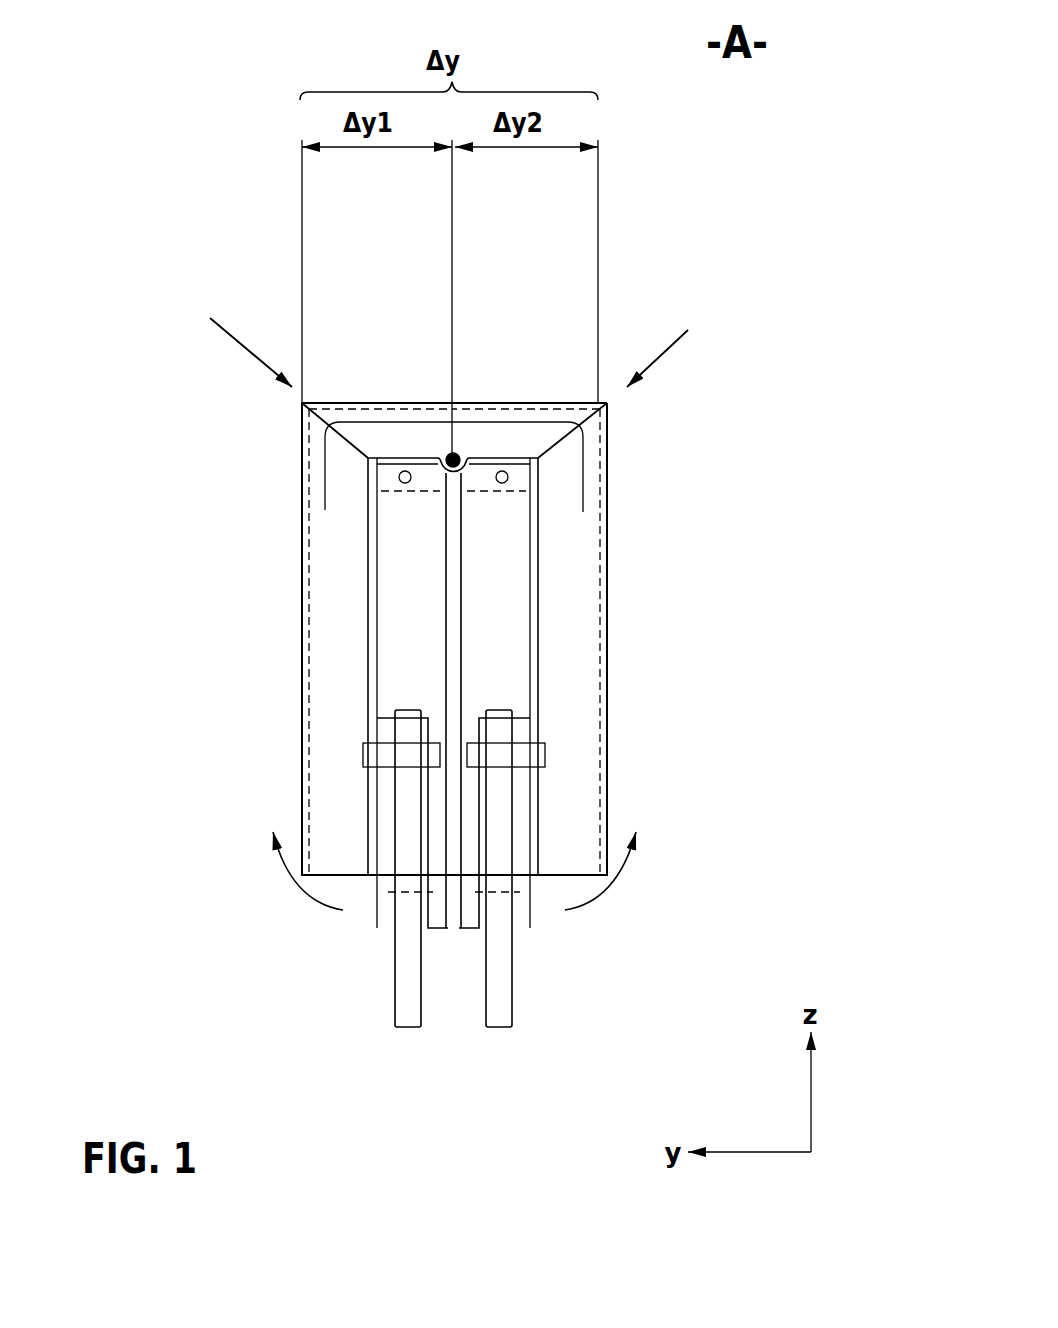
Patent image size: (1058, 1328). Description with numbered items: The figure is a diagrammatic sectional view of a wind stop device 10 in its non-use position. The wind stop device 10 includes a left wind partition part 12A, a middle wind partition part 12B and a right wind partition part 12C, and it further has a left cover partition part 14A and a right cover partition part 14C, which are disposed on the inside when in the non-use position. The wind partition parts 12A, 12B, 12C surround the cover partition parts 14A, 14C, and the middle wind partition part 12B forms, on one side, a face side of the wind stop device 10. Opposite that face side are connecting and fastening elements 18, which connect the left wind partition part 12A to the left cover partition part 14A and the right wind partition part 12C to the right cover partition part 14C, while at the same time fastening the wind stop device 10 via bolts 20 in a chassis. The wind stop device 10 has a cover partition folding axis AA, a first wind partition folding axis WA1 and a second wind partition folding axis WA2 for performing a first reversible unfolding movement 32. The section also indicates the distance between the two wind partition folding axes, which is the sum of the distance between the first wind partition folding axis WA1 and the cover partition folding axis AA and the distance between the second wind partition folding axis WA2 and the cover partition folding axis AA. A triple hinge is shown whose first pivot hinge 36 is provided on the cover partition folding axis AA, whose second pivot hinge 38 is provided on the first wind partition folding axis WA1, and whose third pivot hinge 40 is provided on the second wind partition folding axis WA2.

The wind stop device 10 is at (217, 167).
The left wind partition part 12A is at (322, 600).
The middle wind partition part 12B is at (425, 437).
The right wind partition part 12C is at (578, 600).
The left cover partition part 14A is at (390, 547).
The right cover partition part 14C is at (510, 547).
The connecting and fastening elements 18 is at (343, 808).
The bolts 20 is at (408, 1005).
The first reversible unfolding movement 32 is at (458, 879).
The first pivot hinge 36 is at (579, 574).
The second pivot hinge 38 is at (500, 378).
The third pivot hinge 40 is at (579, 574).
The cover partition folding axis AA is at (458, 455).
The first wind partition folding axis WA1 is at (224, 335).
The second wind partition folding axis WA2 is at (684, 341).